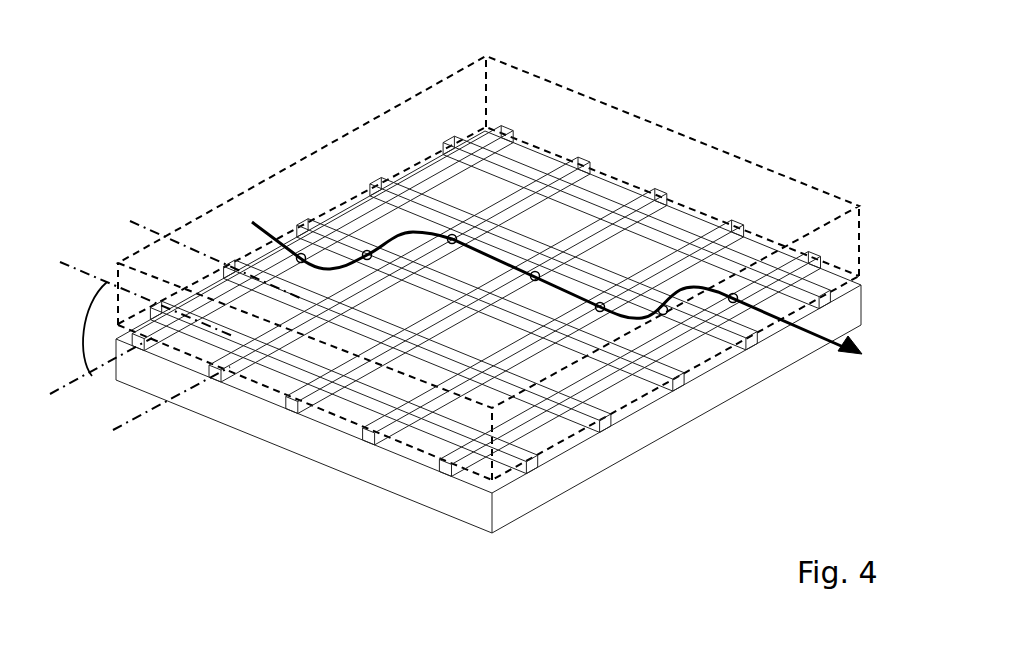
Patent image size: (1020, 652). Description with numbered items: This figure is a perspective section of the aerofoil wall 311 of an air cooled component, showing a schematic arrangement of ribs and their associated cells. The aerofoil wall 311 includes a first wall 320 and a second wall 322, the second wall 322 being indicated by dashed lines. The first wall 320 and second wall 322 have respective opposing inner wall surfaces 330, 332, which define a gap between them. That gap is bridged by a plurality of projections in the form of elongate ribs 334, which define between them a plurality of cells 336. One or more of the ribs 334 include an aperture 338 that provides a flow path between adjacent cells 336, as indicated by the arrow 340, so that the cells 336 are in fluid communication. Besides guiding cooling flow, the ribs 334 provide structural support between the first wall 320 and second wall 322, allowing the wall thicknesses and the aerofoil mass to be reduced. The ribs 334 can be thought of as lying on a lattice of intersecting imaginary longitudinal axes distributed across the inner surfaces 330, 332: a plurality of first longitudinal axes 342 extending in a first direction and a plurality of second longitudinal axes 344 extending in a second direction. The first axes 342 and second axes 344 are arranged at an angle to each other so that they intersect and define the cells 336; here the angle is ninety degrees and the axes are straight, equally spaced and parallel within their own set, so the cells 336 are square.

The aerofoil wall 311 is at (738, 124).
The first wall 320 is at (224, 397).
The second wall 322 is at (228, 217).
The inner wall surface 330 is at (344, 410).
The inner wall surface 332 is at (420, 437).
The elongate ribs 334 is at (580, 408).
The cells 336 is at (537, 220).
The aperture 338 is at (450, 236).
The arrow 340 is at (593, 295).
The first longitudinal axes 342 is at (148, 229).
The second longitudinal axes 344 is at (75, 381).